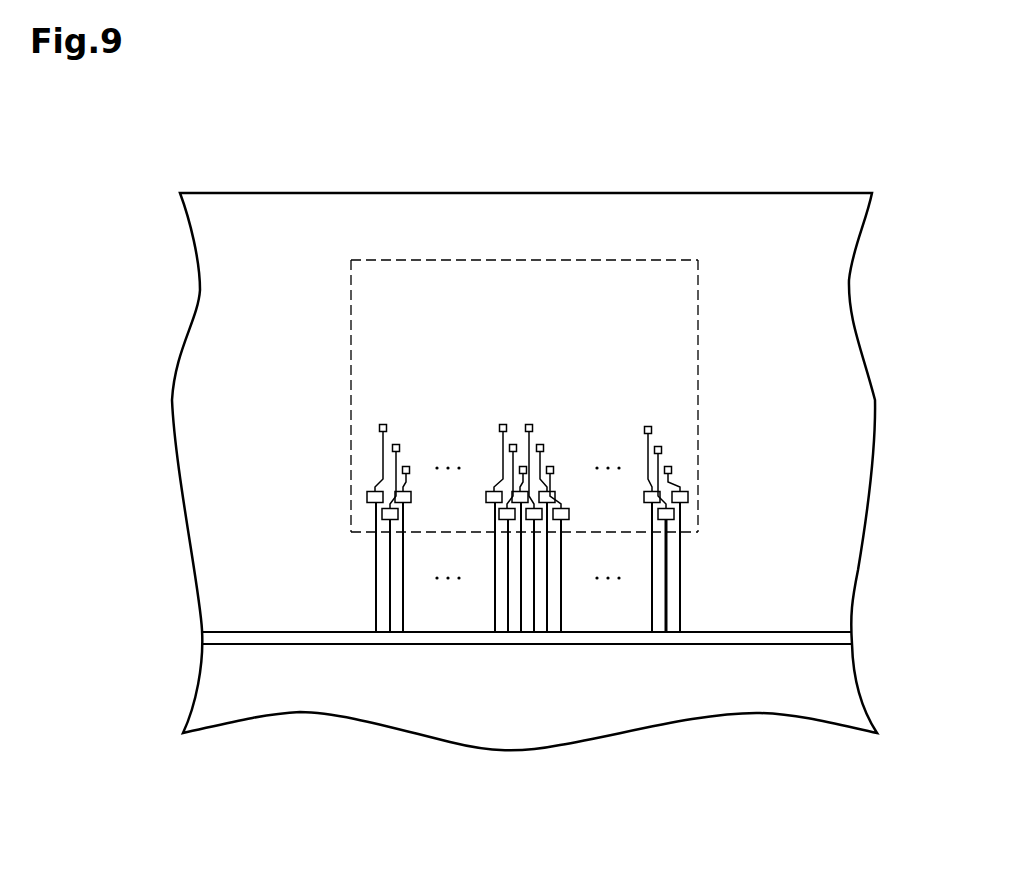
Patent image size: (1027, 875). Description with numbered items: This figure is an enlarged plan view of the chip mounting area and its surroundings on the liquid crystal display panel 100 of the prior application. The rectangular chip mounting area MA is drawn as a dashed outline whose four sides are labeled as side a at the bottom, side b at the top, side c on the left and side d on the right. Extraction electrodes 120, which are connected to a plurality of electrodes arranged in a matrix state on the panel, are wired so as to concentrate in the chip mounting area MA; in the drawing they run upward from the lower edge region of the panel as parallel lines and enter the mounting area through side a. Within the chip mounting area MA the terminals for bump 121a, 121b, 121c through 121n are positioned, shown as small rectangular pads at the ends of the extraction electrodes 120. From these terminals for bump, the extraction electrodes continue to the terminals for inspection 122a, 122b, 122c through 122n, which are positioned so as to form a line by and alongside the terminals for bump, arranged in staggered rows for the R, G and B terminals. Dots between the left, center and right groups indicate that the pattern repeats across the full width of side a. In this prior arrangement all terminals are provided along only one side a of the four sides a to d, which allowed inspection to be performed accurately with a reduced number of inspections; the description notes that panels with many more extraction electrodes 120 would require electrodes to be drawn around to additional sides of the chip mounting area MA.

The liquid crystal display panel 100 is at (300, 106).
The chip mounting area MA is at (531, 362).
The side (a) of chip mounting area a is at (690, 533).
The side (b) of chip mounting area b is at (630, 258).
The side (c) of chip mounting area c is at (351, 332).
The side (d) of chip mounting area d is at (702, 425).
The extraction electrodes 120 is at (362, 592).
The terminal for bump 121a is at (395, 497).
The terminal for bump 121b is at (382, 514).
The terminal for bump 121c is at (368, 496).
The terminal for bump 121n is at (688, 497).
The terminal for inspection 122a is at (380, 425).
The terminal for inspection 122b is at (393, 447).
The terminal for inspection 122c is at (403, 470).
The terminal for inspection 122n is at (672, 470).